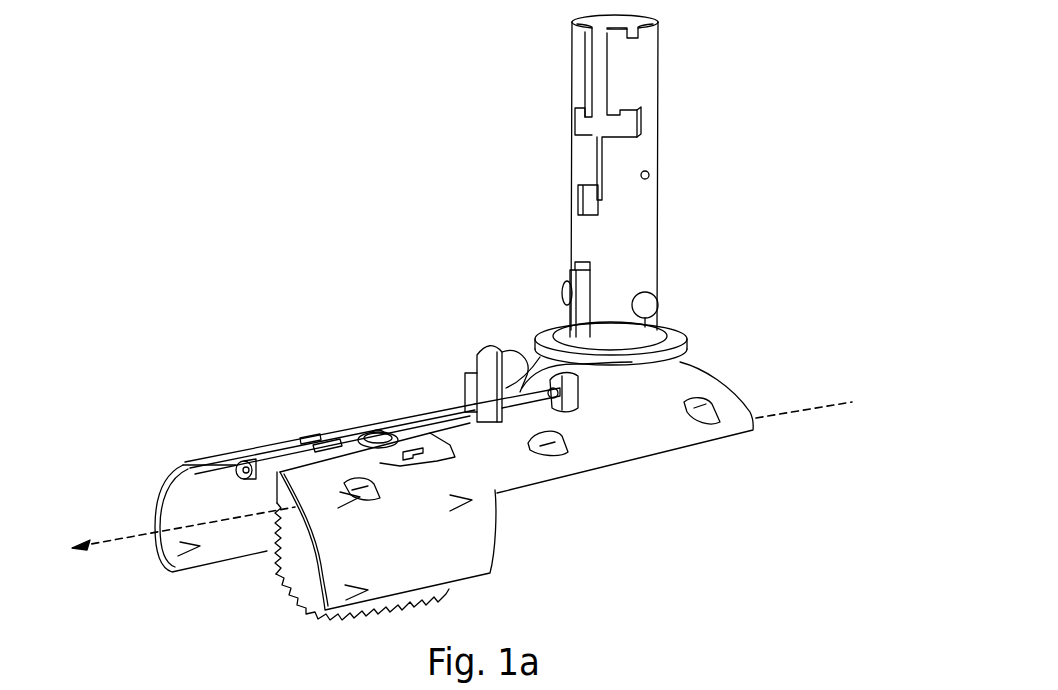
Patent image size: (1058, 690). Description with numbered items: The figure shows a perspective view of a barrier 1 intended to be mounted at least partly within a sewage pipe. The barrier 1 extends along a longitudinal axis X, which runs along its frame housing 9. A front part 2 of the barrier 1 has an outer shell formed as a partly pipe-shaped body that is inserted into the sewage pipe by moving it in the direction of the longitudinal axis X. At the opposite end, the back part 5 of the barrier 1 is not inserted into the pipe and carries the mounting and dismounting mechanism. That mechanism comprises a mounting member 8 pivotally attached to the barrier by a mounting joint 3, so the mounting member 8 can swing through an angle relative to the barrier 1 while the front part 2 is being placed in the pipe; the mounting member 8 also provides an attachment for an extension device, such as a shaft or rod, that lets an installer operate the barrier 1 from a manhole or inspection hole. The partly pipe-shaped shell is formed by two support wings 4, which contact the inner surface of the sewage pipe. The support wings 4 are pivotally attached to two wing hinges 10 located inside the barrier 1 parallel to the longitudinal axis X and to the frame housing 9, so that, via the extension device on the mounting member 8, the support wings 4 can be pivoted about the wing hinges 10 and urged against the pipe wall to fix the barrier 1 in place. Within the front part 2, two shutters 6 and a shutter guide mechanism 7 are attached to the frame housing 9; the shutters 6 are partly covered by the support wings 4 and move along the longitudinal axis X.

The barrier 1 is at (347, 307).
The front part 2 is at (297, 403).
The mounting joint 3 is at (687, 325).
The support wings 4 is at (456, 548).
The back part 5 is at (663, 462).
The shutters 6 is at (300, 575).
The shutter guide mechanism 7 is at (370, 423).
The mounting member 8 is at (680, 178).
The frame housing 9 is at (268, 465).
The wing hinges 10 is at (236, 462).
The longitudinal axis X is at (440, 484).